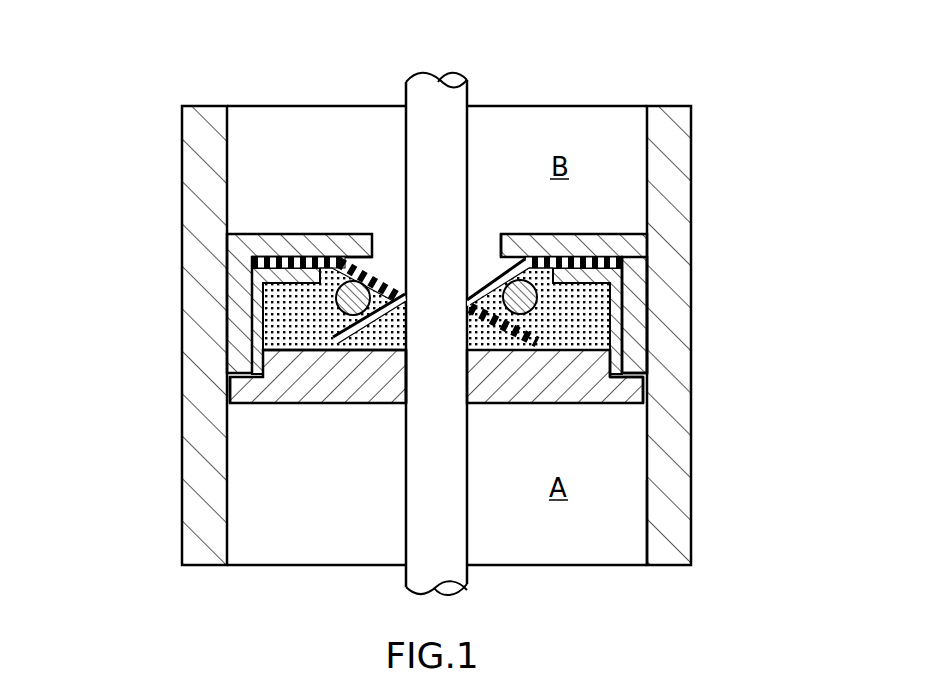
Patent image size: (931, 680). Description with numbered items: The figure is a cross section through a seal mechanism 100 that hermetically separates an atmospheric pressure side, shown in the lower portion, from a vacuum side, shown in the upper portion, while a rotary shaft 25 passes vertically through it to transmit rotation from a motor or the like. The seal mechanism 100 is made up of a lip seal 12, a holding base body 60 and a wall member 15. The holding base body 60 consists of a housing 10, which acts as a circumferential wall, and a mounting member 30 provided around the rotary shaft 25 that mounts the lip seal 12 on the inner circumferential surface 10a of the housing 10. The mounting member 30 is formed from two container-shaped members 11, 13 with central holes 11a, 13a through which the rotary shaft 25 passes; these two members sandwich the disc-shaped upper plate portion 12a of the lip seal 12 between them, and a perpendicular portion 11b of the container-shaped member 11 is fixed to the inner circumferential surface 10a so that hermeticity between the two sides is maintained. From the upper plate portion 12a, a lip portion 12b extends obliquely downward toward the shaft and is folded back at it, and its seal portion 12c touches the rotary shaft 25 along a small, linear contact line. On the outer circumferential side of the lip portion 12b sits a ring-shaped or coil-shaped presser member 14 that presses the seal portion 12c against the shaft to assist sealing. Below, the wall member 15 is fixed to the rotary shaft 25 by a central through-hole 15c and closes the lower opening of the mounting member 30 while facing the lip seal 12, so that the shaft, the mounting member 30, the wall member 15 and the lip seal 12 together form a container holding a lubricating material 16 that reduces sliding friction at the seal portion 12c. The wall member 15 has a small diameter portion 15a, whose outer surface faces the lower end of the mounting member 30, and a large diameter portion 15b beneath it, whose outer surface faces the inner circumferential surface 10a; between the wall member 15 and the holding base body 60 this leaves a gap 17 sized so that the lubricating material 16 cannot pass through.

The seal mechanism 100 is at (289, 454).
The housing 10 is at (672, 250).
The inner circumferential surface 10a is at (647, 527).
The container-shaped member 11 is at (237, 252).
The hole 11a is at (502, 243).
The perpendicular portion 11b is at (638, 300).
The lip seal 12 is at (577, 254).
The upper plate portion 12a is at (305, 255).
The lip portion 12b is at (381, 296).
The seal portion 12c is at (407, 298).
The container-shaped member 13 is at (258, 282).
The hole 13a is at (338, 265).
The presser member 14 is at (372, 191).
The wall member 15 is at (458, 483).
The small diameter portion 15a is at (598, 360).
The large diameter portion 15b is at (633, 387).
The through-hole 15c is at (411, 379).
The lubricating material 16 is at (320, 350).
The gap 17 is at (227, 407).
The rotary shaft 25 is at (463, 508).
The mounting member 30 is at (433, 188).
The holding base body 60 is at (765, 175).